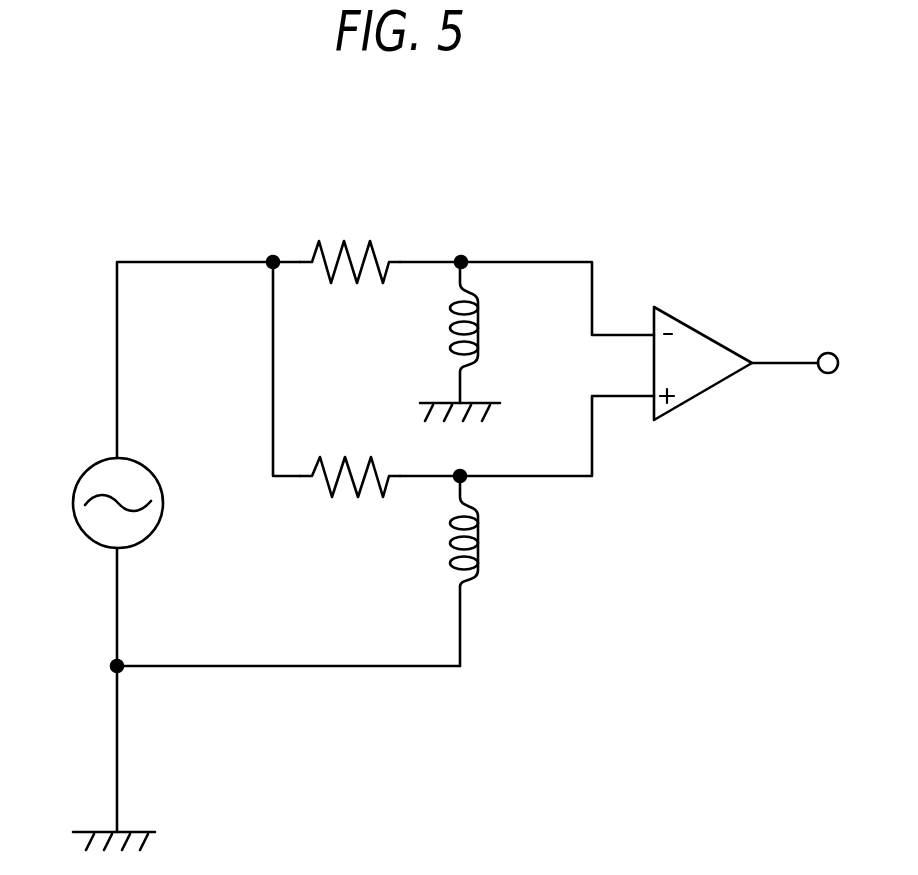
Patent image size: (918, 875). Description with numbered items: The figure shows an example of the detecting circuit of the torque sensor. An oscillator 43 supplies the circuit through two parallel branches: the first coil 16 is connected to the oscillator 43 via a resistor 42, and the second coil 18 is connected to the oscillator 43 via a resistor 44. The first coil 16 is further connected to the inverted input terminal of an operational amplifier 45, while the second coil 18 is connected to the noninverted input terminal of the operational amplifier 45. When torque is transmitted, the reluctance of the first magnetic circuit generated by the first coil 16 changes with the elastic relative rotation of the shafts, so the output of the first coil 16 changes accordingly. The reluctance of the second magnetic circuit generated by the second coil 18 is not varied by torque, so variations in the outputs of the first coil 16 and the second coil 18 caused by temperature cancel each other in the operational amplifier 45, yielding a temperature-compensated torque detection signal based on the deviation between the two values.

The resistor 42 is at (355, 240).
The resistor 44 is at (345, 497).
The first coil 16 is at (450, 345).
The second coil 18 is at (448, 565).
The oscillator 43 is at (98, 475).
The operational amplifier 45 is at (706, 378).